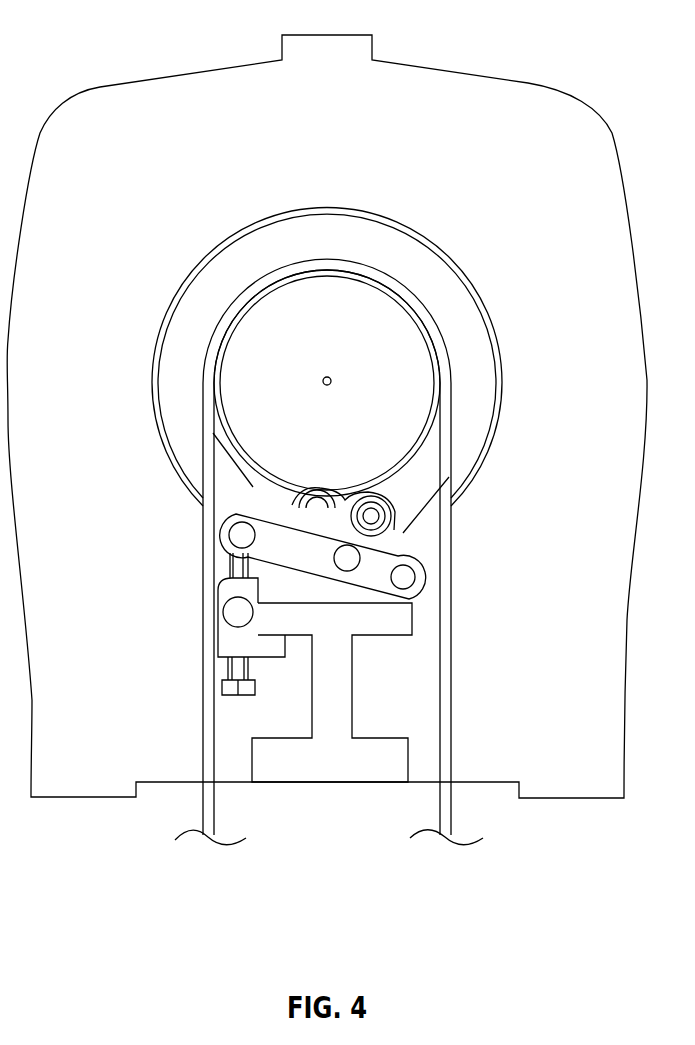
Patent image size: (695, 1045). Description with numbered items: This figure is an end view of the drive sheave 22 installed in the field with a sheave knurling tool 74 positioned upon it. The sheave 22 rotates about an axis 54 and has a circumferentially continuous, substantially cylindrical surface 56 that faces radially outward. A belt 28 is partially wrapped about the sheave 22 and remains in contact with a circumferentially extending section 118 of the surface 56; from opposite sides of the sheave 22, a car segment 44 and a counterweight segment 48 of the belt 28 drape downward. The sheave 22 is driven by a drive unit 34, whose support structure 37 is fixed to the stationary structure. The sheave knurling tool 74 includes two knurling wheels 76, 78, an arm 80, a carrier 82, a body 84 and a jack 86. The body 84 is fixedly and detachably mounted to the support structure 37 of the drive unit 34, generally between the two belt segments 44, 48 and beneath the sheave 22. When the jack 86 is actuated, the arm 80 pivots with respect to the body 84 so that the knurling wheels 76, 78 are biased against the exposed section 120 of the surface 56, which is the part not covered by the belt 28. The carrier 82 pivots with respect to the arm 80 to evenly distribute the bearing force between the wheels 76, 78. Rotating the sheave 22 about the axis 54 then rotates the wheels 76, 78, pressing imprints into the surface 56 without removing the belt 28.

The drive unit 34 is at (583, 92).
The surface 56 is at (263, 282).
The belt 28 is at (444, 703).
The circumferentially extending section 118 is at (378, 277).
The sheave 22 is at (338, 316).
The axis 54 is at (331, 378).
The exposed section 120 is at (250, 482).
The knurling wheel 76 is at (312, 494).
The knurling wheel 78 is at (389, 490).
The carrier 82 is at (390, 535).
The arm 80 is at (413, 544).
The support structure 37 is at (353, 698).
The body 84 is at (217, 648).
The jack 86 is at (240, 698).
The sheave knurling tool 74 is at (330, 613).
The counterweight segment 48 is at (202, 815).
The car segment 44 is at (448, 805).